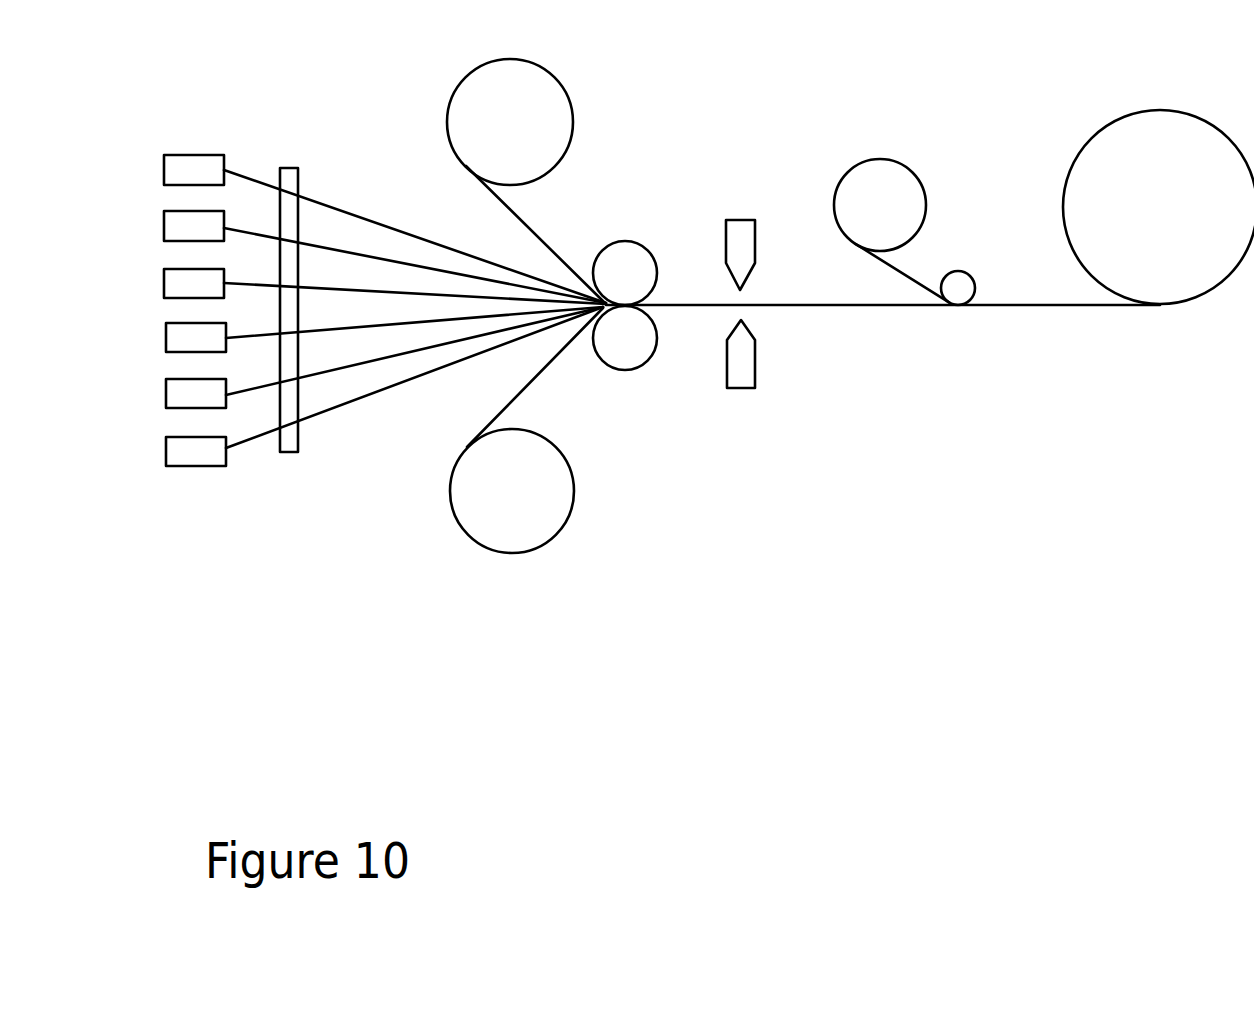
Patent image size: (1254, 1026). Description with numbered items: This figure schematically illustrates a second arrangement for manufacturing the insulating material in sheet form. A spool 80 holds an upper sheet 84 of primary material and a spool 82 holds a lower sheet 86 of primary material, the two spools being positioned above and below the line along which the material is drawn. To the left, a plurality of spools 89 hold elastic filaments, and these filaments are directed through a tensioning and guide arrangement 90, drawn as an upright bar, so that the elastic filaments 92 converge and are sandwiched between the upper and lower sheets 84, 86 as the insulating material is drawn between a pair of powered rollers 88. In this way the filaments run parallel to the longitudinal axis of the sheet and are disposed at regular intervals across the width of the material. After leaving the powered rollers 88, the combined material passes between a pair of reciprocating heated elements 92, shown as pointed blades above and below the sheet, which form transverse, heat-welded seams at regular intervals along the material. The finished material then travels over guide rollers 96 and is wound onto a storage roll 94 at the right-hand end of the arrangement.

The spool 80 is at (563, 75).
The spool 82 is at (563, 537).
The upper sheet 84 is at (537, 232).
The lower sheet 86 is at (533, 383).
The powered rollers 88 is at (652, 257).
The spools 89 is at (150, 177).
The tensioning and guide arrangement 90 is at (304, 447).
The elastic filaments / reciprocating heated elements 92 is at (455, 325).
The storage roll 94 is at (1158, 207).
The guide rollers 96 is at (896, 161).